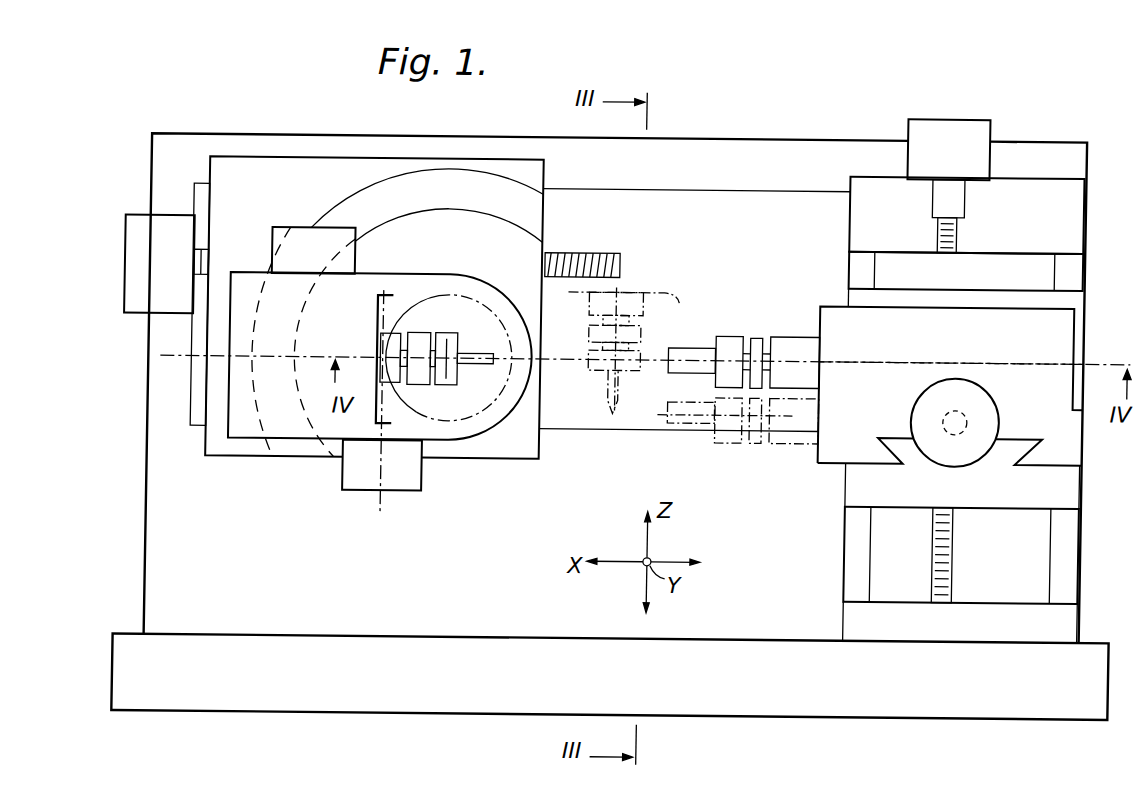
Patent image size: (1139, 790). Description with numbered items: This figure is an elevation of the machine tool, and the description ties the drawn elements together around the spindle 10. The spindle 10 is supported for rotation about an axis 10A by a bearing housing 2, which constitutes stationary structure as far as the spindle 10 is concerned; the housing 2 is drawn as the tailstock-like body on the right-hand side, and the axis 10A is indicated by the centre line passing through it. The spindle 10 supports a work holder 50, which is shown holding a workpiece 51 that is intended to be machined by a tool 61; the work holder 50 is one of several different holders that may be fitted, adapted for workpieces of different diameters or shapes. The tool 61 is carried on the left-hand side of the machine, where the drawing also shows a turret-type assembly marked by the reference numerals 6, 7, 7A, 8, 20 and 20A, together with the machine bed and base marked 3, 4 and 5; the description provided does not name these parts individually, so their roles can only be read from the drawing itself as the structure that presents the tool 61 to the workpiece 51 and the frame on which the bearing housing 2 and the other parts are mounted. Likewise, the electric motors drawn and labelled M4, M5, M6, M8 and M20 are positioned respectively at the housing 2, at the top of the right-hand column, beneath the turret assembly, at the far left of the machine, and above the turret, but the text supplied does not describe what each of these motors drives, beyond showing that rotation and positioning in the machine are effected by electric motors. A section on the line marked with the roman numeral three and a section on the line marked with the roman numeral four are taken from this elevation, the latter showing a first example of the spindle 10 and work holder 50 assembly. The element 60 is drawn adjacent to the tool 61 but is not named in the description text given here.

The bearing housing 2 is at (834, 305).
The machine bed 3 is at (381, 578).
The tailstock slide 4 is at (829, 460).
The tailstock column base 5 is at (860, 489).
The turret head 6 is at (243, 431).
The turret housing 7 is at (513, 448).
The workpiece center 7A is at (448, 359).
The slide guide 8 is at (543, 447).
The spindle 10 is at (792, 343).
The axis 10A is at (840, 359).
The chuck 20 is at (398, 338).
The spindle axis 20A is at (178, 359).
The work holder 50 is at (724, 340).
The workpiece 51 is at (687, 367).
The workpiece 60 is at (446, 334).
The tool 61 is at (610, 385).
The motor M4 is at (988, 406).
The motor M5 is at (929, 157).
The motor M6 is at (347, 478).
The motor M8 is at (146, 287).
The motor M20 is at (276, 233).